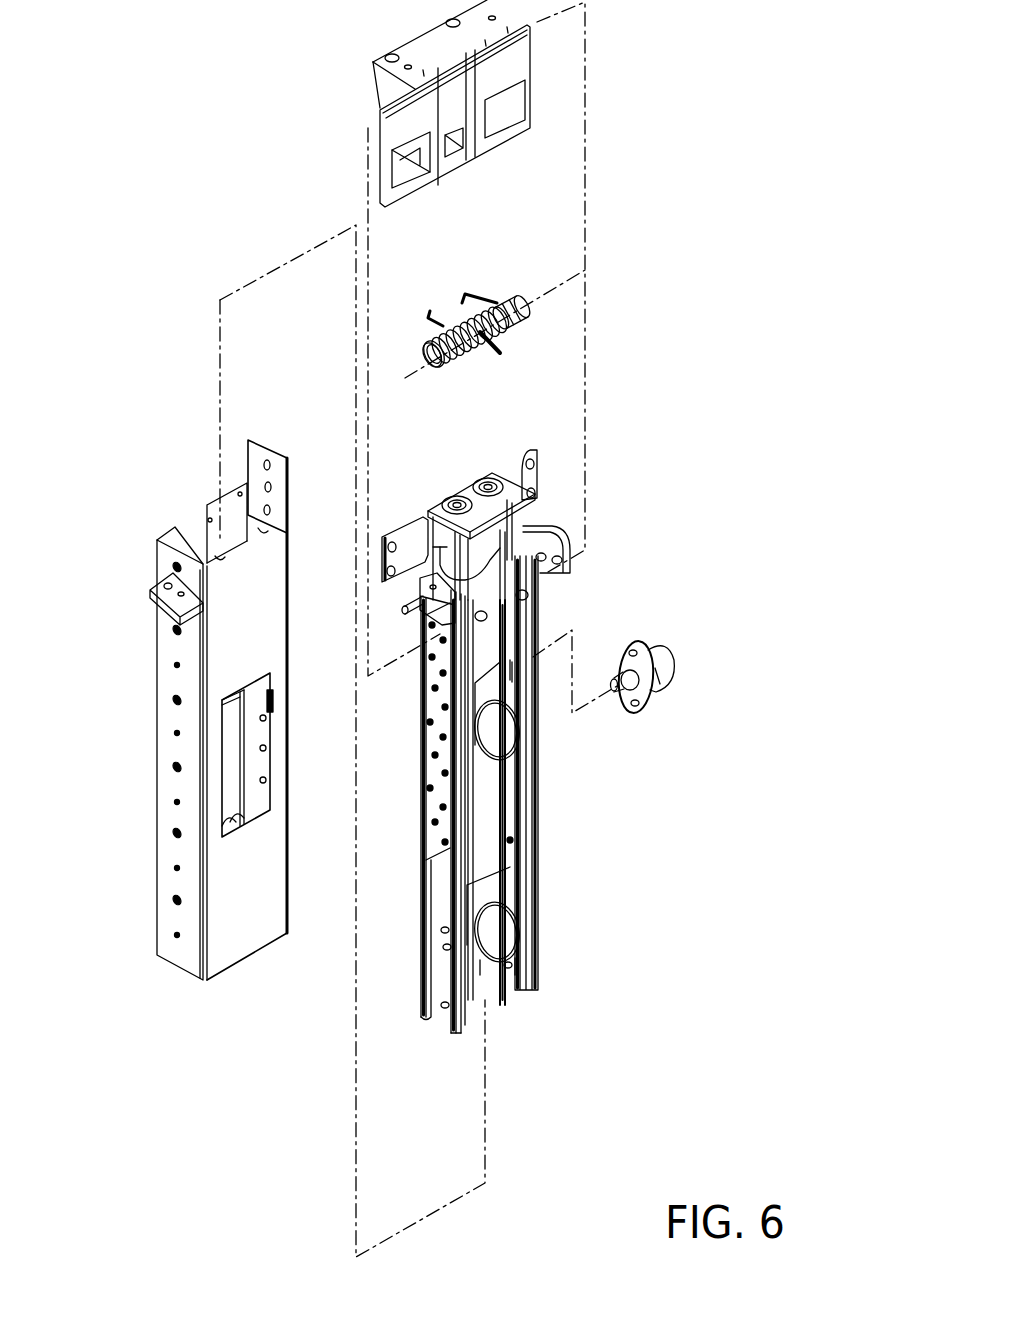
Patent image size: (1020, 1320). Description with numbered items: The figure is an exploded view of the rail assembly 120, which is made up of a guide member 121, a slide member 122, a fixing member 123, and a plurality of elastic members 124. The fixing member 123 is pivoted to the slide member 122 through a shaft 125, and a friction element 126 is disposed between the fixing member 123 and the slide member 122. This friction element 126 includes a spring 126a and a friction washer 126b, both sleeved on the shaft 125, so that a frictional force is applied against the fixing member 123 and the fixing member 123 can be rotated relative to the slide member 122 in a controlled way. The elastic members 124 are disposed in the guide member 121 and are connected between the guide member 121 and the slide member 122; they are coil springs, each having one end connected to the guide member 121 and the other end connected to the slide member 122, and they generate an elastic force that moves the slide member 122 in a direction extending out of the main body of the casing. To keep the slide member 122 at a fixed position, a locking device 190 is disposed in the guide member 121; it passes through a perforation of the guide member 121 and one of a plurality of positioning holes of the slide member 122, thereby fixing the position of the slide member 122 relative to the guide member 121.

The rail assembly 120 is at (166, 128).
The guide member 121 is at (173, 783).
The slide member 122 is at (543, 816).
The fixing member 123 is at (400, 113).
The elastic members 124 is at (510, 737).
The shaft 125 is at (432, 362).
The friction element 126 is at (591, 252).
The spring 126a is at (510, 272).
The friction washer 126b is at (533, 316).
The locking device 190 is at (662, 665).